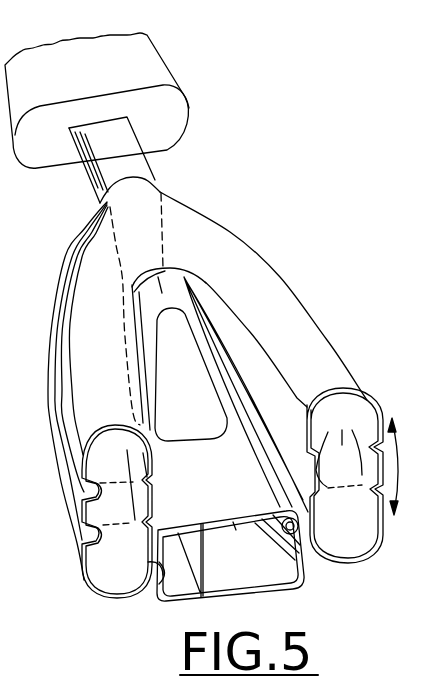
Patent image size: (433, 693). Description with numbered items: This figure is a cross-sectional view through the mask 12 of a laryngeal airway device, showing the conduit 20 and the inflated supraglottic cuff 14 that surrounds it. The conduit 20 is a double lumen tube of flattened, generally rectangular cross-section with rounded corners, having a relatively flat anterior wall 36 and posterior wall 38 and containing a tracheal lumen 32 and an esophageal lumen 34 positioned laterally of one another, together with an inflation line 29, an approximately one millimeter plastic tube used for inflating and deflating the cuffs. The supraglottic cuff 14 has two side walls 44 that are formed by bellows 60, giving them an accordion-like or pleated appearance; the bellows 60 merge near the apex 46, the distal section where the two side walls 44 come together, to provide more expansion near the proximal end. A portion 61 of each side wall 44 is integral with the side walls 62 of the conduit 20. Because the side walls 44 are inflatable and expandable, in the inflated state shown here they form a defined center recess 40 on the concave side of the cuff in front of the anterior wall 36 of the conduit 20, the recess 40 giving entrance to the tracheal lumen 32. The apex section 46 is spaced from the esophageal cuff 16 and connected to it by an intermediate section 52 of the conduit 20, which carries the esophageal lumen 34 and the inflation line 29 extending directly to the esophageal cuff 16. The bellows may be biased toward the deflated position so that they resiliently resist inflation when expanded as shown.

The mask 12 is at (265, 206).
The supraglottic cuff 14 is at (95, 573).
The esophageal cuff 16 is at (160, 72).
The conduit 20 is at (313, 564).
The inflation line 29 is at (282, 518).
The tracheal lumen 32 is at (263, 573).
The esophageal lumen 34 is at (180, 588).
The anterior wall 36 is at (230, 556).
The posterior wall 38 is at (240, 594).
The center recess 40 is at (240, 469).
The side walls 44 is at (80, 343).
The apex section 46 is at (140, 193).
The intermediate section 52 is at (147, 167).
The bellows 60 is at (53, 513).
The portion of side wall 61 is at (312, 528).
The side walls of conduit 62 is at (172, 568).